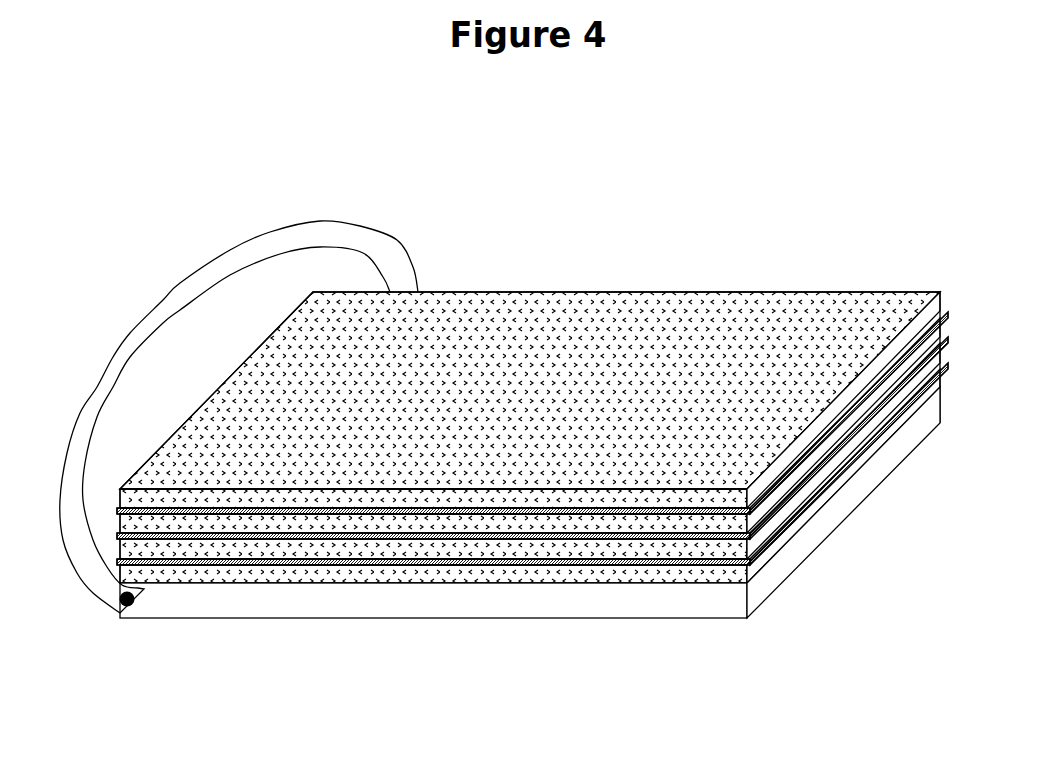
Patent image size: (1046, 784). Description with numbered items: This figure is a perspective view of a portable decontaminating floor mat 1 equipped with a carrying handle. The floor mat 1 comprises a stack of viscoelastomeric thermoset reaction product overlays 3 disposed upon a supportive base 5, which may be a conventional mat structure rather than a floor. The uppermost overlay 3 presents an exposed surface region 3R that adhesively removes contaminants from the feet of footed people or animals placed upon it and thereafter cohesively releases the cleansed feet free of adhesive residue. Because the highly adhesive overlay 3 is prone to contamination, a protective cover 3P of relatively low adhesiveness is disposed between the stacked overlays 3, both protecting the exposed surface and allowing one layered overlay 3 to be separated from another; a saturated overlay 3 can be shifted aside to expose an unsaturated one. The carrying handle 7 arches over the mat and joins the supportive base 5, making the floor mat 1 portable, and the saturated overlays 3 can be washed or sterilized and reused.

The floor mat 1 is at (451, 168).
The viscoelastomeric thermoset overlay 3 is at (773, 310).
The exposed surface region 3R is at (632, 313).
The protective cover 3P is at (738, 510).
The supportive base 5 is at (332, 598).
The cable 7 is at (165, 307).